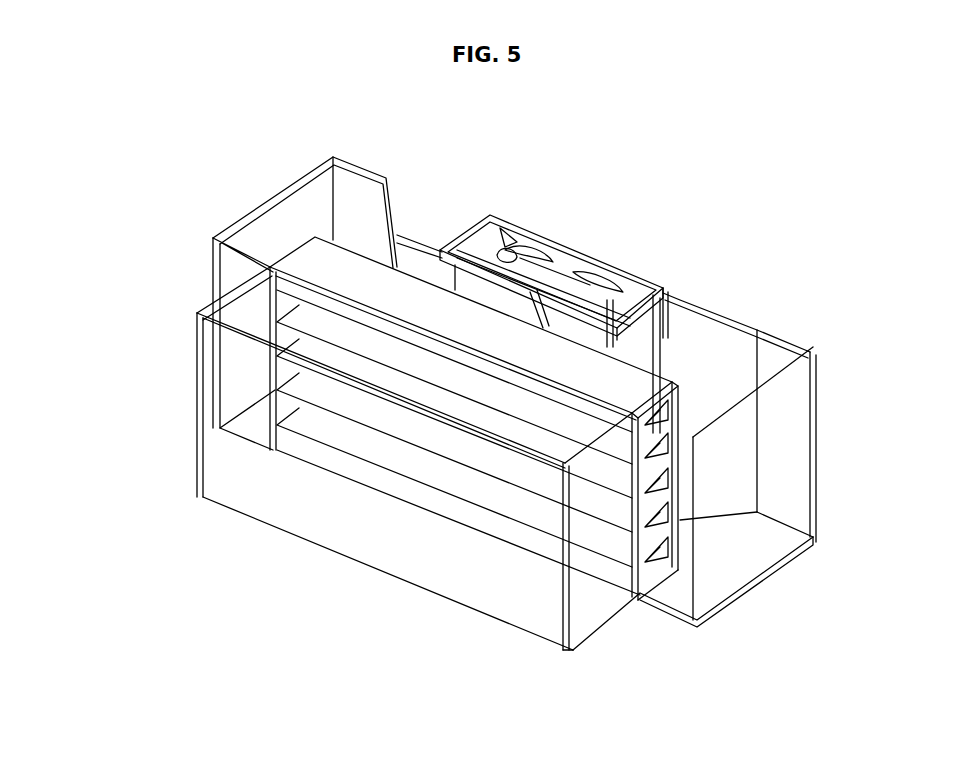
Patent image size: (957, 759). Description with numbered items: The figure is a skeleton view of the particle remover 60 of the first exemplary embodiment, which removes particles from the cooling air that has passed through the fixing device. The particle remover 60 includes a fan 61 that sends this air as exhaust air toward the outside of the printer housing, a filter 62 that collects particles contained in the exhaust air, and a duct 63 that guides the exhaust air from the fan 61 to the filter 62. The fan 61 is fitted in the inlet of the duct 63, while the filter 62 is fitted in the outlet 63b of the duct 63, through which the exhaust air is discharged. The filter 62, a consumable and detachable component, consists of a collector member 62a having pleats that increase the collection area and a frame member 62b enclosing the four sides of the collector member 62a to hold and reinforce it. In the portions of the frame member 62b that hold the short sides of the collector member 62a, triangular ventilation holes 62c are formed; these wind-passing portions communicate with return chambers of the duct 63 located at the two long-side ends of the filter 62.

The particle remover 60 is at (175, 200).
The fan 61 is at (588, 258).
The filter 62 is at (311, 247).
The collector member 62a is at (331, 395).
The frame member 62b is at (405, 300).
The ventilation holes 62c is at (670, 548).
The duct 63 is at (691, 312).
The outlet 63b is at (430, 557).